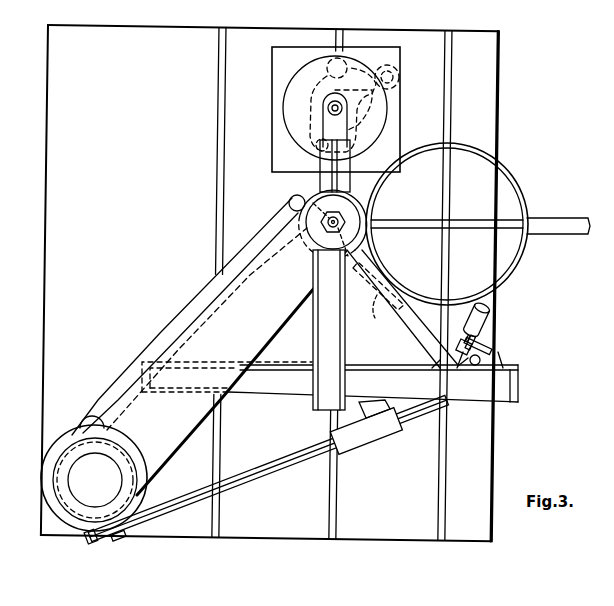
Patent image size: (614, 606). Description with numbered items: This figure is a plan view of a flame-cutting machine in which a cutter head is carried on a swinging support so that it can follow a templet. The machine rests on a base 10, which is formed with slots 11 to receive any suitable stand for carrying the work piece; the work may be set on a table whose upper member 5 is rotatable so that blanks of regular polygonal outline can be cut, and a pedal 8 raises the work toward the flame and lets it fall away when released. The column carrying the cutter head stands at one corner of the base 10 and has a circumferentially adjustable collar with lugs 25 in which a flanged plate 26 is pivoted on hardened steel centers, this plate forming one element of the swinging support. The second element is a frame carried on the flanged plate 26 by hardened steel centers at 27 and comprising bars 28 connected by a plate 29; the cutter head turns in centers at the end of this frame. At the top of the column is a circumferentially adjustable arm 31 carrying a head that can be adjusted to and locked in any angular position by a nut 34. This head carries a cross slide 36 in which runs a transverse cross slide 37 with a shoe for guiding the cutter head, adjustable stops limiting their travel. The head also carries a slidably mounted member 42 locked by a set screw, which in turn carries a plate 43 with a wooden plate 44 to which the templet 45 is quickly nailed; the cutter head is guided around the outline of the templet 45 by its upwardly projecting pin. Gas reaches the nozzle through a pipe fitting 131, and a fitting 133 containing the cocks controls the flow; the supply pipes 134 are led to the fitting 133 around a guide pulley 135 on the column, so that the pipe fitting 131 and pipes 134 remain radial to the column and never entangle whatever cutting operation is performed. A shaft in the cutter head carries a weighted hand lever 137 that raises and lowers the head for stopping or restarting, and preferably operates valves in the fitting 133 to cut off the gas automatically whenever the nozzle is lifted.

The upper table member 5 is at (500, 196).
The pedal 8 is at (573, 219).
The base 10 is at (270, 283).
The slots 11 is at (222, 79).
The lugs 25 is at (73, 440).
The flanged plate 26 is at (172, 328).
The centers 27 is at (290, 203).
The bars 28 is at (413, 320).
The plate 29 is at (378, 302).
The arm 31 is at (245, 316).
The nut 34 is at (325, 229).
The cross slide 36 is at (312, 400).
The transverse cross slide 37 is at (266, 398).
The slidably mounted member 42 is at (343, 133).
The plate 43 is at (397, 67).
The wooden plate 44 is at (285, 109).
The templet 45 is at (272, 105).
The pipe fitting 131 is at (410, 423).
The fitting 133 is at (367, 432).
The pipes 134 is at (270, 466).
The guide pulley 135 is at (118, 520).
The weighted hand lever 137 is at (500, 335).